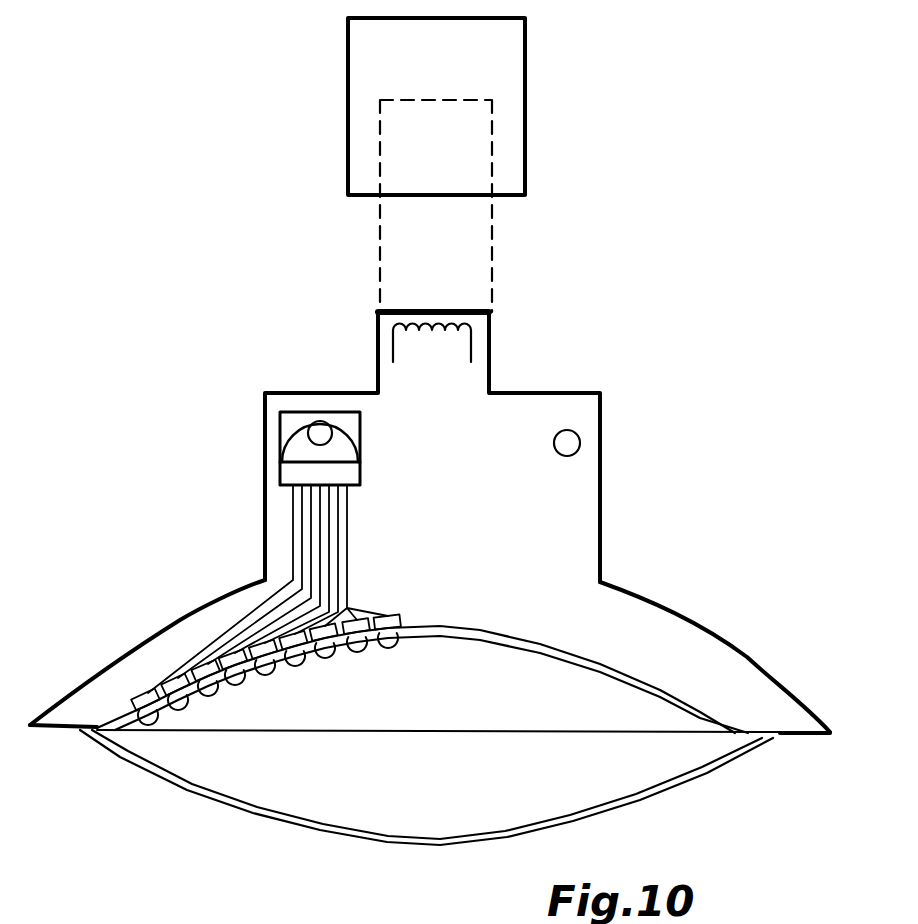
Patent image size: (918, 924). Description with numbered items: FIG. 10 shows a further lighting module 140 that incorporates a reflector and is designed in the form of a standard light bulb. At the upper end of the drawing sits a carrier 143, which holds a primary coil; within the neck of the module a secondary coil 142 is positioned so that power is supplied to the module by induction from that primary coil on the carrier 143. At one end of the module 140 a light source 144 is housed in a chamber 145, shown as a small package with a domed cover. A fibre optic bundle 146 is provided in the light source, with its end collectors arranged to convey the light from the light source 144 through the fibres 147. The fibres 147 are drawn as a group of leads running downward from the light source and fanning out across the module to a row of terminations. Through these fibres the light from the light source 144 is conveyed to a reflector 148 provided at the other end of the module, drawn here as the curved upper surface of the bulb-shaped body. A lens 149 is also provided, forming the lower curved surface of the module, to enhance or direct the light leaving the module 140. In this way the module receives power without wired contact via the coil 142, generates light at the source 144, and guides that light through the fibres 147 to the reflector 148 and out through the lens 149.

The lighting module 140 is at (525, 493).
The secondary coil 142 is at (471, 340).
The carrier 143 is at (470, 70).
The light source 144 is at (318, 435).
The chamber 145 is at (340, 440).
The fibre optic bundle 146 is at (348, 472).
The fibres 147 is at (237, 658).
The reflector 148 is at (606, 668).
The lens 149 is at (395, 843).